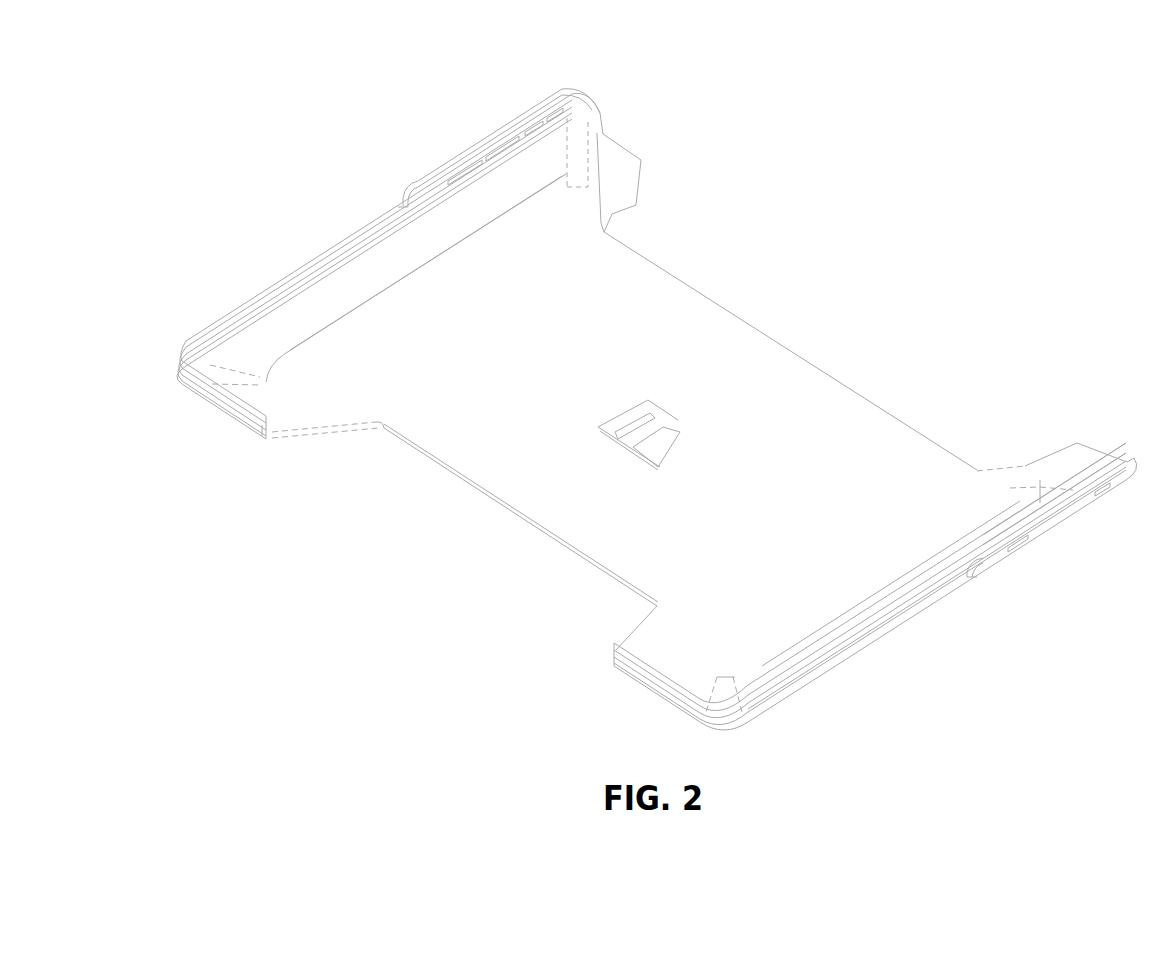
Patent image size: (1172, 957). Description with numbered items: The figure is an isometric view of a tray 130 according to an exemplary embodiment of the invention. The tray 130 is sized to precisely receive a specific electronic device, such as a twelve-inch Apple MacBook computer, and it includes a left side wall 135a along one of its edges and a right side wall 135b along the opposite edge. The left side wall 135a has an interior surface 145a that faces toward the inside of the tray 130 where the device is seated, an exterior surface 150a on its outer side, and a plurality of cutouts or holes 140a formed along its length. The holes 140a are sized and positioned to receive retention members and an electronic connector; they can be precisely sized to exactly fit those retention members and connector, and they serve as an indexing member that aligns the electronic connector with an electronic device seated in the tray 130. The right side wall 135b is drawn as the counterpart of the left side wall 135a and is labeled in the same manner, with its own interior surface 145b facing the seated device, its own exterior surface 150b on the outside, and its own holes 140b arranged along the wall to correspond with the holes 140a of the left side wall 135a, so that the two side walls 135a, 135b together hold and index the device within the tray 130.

The tray 130 is at (657, 396).
The left side wall 135a is at (448, 167).
The holes 140a is at (555, 120).
The interior surface 145a is at (430, 197).
The exterior surface 150a is at (417, 182).
The right side wall 135b is at (983, 555).
The holes 140b is at (1123, 485).
The interior surface 145b is at (1005, 537).
The exterior surface 150b is at (997, 563).